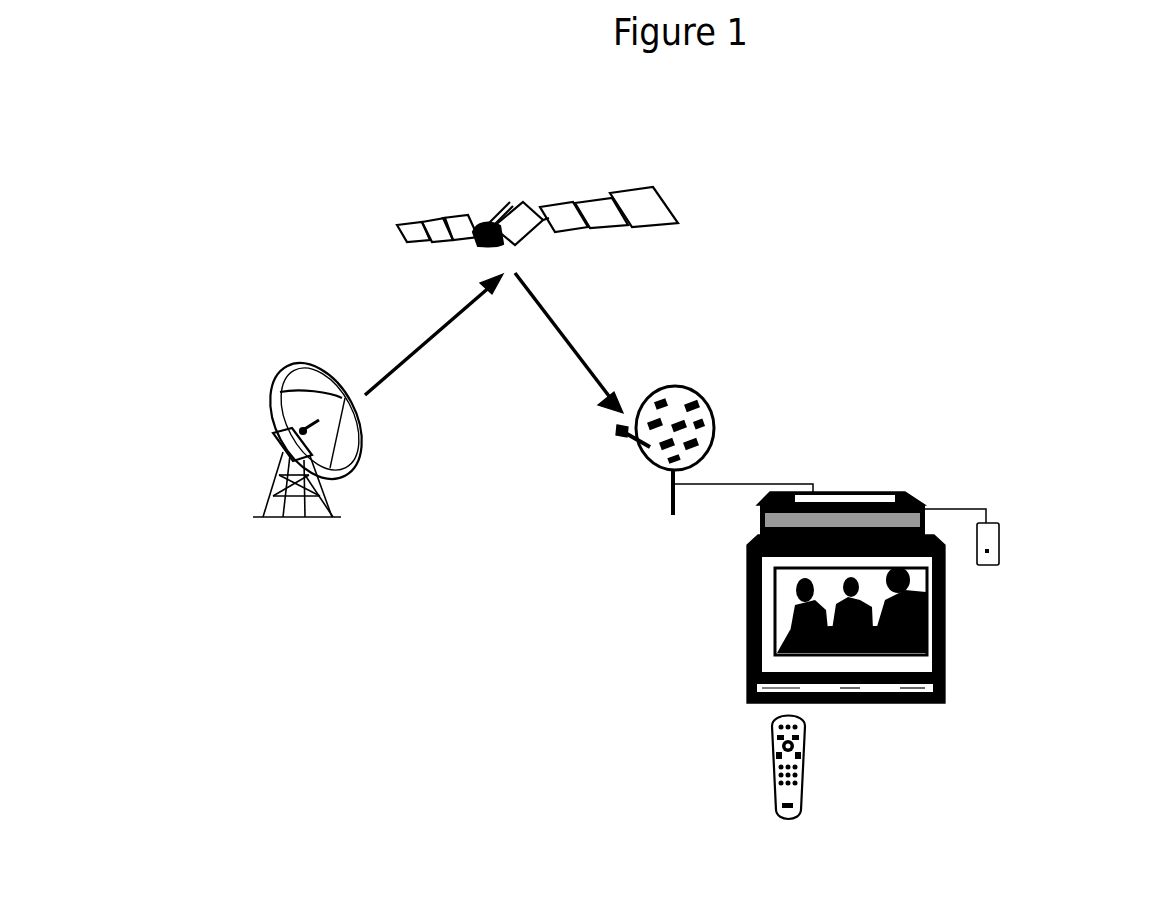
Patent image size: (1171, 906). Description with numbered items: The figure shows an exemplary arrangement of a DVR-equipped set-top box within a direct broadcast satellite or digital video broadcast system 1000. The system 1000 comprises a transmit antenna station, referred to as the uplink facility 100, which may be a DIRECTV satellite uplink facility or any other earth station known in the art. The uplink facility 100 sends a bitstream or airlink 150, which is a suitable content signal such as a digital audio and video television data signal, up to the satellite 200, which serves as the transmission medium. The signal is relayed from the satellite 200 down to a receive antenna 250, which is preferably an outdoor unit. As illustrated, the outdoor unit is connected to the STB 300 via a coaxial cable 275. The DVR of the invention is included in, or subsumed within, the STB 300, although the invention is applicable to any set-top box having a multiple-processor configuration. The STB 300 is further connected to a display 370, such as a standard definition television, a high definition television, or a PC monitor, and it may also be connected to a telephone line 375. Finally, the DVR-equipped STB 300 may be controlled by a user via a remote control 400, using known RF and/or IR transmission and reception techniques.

The system 1000 is at (1016, 252).
The uplink facility 100 is at (262, 520).
The airlink 150 is at (428, 335).
The satellite 200 is at (680, 213).
The receive antenna 250 is at (650, 462).
The coaxial cable 275 is at (743, 483).
The set-top box 300 is at (876, 492).
The display 370 is at (947, 690).
The telephone line 375 is at (1000, 548).
The remote control 400 is at (772, 780).